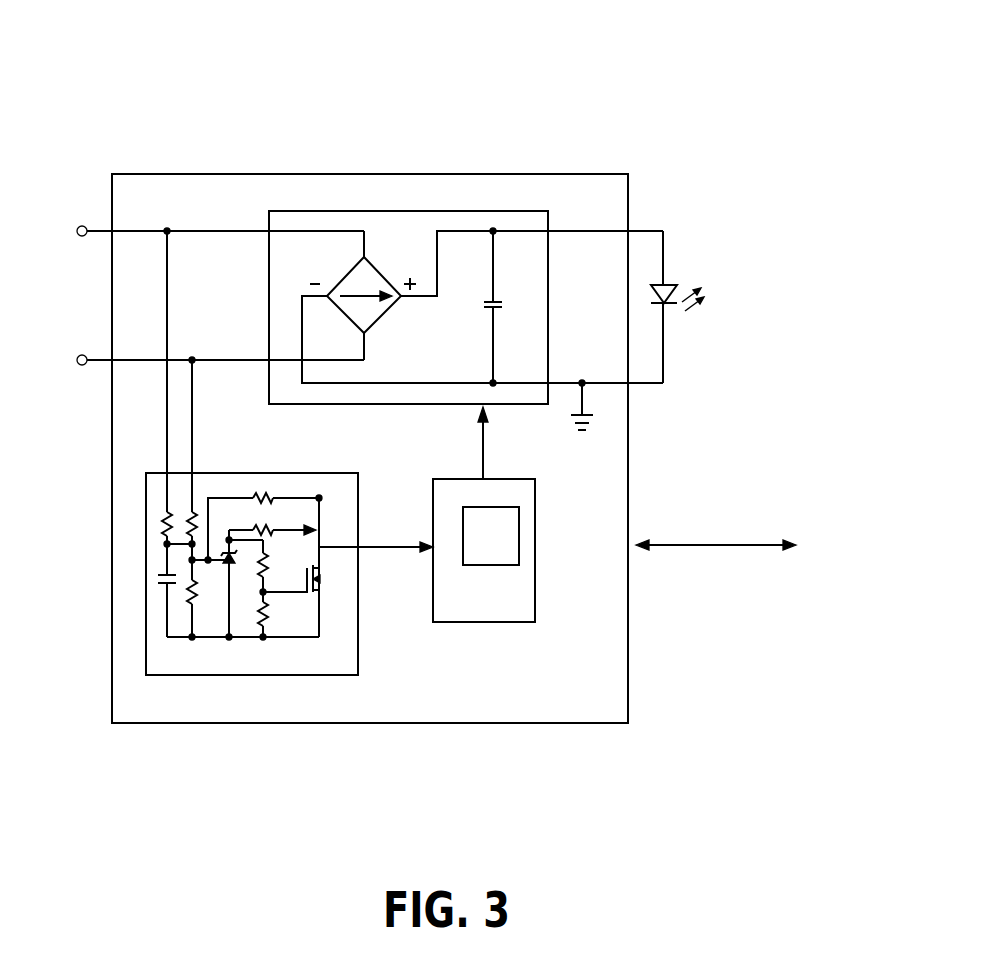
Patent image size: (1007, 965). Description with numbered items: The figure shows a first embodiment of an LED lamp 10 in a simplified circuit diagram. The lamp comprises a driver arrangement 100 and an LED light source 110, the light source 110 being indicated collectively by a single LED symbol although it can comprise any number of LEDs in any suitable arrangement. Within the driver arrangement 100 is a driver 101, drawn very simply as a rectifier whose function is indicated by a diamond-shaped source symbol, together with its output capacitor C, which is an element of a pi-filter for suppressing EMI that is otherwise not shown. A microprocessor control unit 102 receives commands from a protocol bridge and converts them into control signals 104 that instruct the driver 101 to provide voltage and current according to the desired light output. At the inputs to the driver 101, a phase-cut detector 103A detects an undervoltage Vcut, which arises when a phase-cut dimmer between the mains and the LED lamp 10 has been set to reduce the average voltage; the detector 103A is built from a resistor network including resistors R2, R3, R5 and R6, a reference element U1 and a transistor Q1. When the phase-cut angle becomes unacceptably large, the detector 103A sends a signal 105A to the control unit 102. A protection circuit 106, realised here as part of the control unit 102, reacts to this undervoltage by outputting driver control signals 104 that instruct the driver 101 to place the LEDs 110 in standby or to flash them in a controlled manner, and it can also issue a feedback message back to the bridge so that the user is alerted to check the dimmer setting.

The LED lamp 10 is at (606, 112).
The driver arrangement 100 is at (533, 724).
The driver 101 is at (466, 270).
The microprocessor control unit 102 is at (524, 588).
The phase-cut detector 103A is at (252, 609).
The control signal 104 is at (483, 447).
The signal 105A is at (392, 546).
The protection circuit 106 is at (500, 507).
The LED light source 110 is at (665, 303).
The output capacitor C is at (497, 300).
The resistor R2 is at (196, 512).
The resistor R3 is at (208, 598).
The resistor R5 is at (272, 519).
The resistor R6 is at (266, 588).
The reference element U1 is at (240, 583).
The transistor Q1 is at (307, 578).
The undervoltage Vcut is at (209, 369).